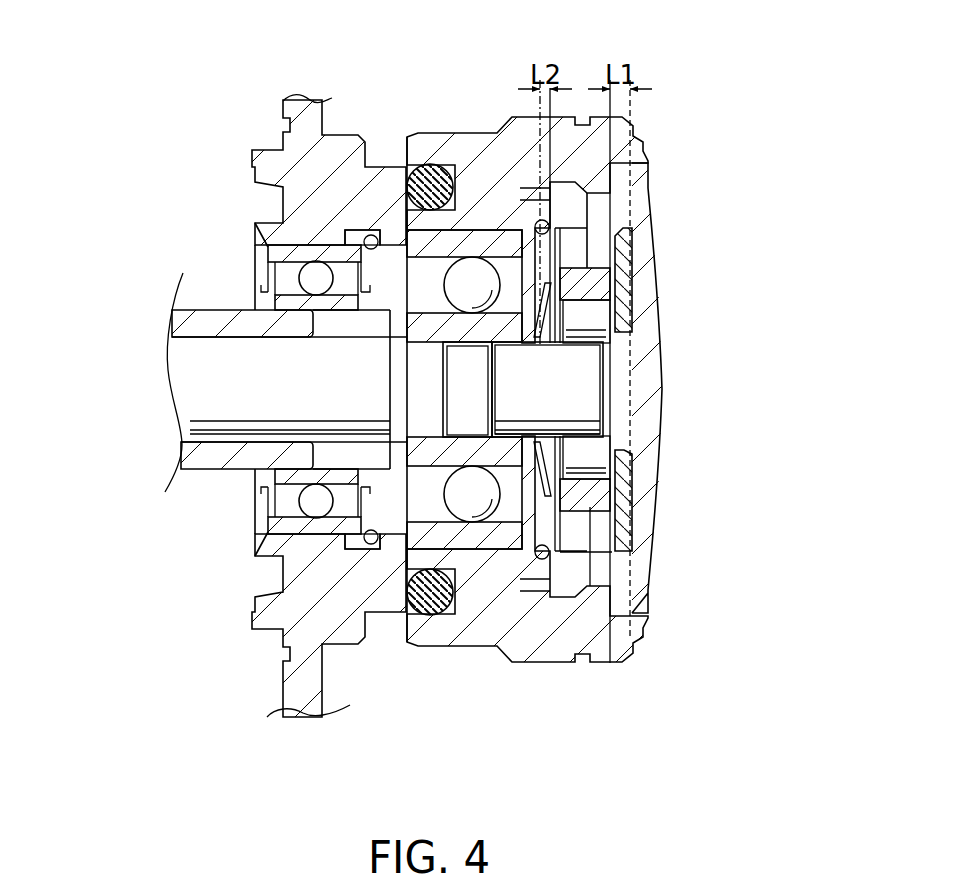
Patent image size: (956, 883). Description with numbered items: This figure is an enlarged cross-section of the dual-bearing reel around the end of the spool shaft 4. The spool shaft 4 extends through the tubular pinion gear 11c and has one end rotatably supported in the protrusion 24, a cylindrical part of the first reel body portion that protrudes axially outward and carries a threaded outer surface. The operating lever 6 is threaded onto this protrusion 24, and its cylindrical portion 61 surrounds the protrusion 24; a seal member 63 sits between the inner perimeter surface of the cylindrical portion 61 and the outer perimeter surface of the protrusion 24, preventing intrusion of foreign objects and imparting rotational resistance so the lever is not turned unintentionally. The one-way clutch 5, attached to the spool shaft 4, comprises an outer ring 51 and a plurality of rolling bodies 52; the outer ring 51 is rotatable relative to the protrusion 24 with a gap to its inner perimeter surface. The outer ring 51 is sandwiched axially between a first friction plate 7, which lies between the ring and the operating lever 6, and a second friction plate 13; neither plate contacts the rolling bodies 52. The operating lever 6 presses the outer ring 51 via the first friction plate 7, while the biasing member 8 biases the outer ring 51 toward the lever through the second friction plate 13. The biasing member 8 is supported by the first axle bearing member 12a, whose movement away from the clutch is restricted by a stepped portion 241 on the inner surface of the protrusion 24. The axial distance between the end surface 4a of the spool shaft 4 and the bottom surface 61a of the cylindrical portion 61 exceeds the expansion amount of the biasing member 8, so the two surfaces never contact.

The spool shaft 4 is at (190, 382).
The end surface of the spool shaft 4a is at (615, 387).
The one-way clutch 5 is at (600, 258).
The operating lever 6 is at (607, 666).
The first friction plate 7 is at (616, 482).
The biasing member 8 is at (543, 560).
The pinion gear 11c is at (213, 308).
The first axle bearing member 12a is at (478, 552).
The second friction plate 13 is at (618, 557).
The protrusion 24 is at (385, 617).
The outer ring 51 is at (618, 503).
The rolling bodies 52 is at (614, 452).
The cylindrical portion 61 is at (658, 277).
The bottom surface of the cylindrical portion 61a is at (622, 353).
The seal member 63 is at (433, 172).
The stepped portion 241 is at (410, 607).